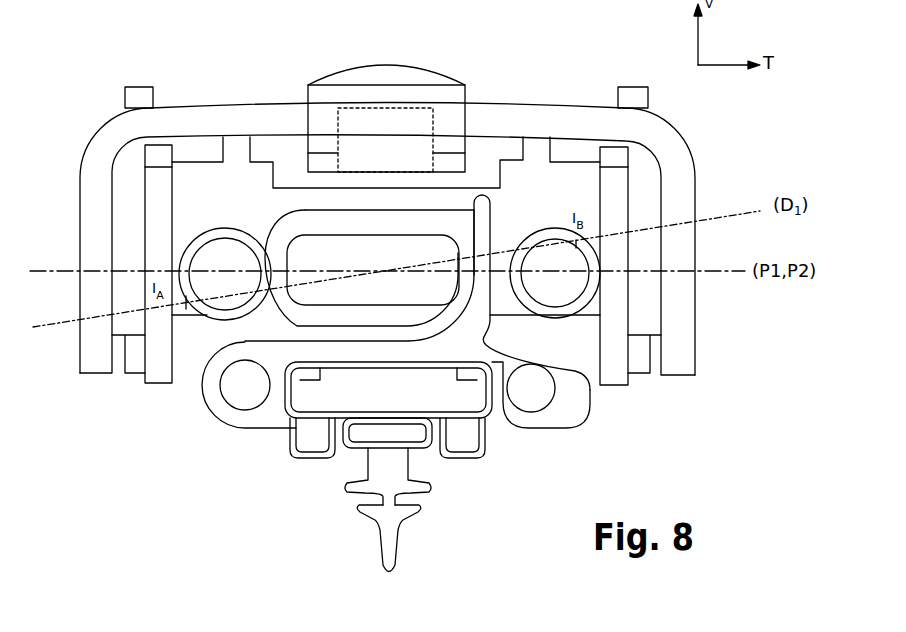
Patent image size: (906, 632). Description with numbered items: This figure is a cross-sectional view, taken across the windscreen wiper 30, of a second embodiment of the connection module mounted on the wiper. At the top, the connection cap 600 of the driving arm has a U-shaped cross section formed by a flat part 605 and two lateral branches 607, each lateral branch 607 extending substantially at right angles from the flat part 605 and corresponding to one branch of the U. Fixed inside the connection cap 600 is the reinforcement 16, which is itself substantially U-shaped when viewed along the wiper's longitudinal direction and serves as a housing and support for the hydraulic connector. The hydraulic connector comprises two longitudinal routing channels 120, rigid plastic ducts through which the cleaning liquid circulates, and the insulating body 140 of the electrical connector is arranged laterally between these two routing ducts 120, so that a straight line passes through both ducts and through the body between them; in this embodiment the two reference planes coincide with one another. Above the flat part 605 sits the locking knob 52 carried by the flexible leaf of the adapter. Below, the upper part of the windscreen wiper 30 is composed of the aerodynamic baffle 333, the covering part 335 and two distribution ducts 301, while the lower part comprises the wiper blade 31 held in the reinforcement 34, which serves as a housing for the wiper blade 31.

The reinforcement 16 is at (160, 346).
The windscreen wiper 30 is at (510, 465).
The wiper blade 31 is at (383, 520).
The reinforcement 34 is at (323, 447).
The locking knob 52 is at (372, 63).
The longitudinal routing channel 120 is at (216, 316).
The insulating body 140 is at (318, 250).
The distribution duct 301 is at (227, 414).
The aerodynamic baffle 333 is at (491, 207).
The covering part 335 is at (408, 348).
The connection cap 600 is at (688, 324).
The flat part 605 is at (497, 102).
The lateral branch 607 is at (94, 333).